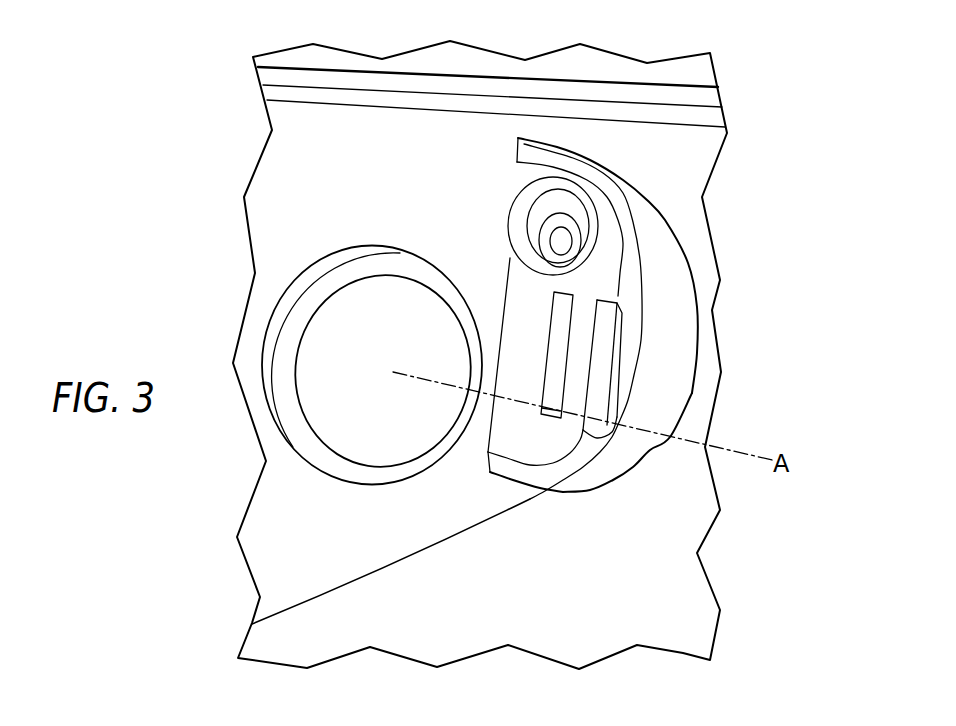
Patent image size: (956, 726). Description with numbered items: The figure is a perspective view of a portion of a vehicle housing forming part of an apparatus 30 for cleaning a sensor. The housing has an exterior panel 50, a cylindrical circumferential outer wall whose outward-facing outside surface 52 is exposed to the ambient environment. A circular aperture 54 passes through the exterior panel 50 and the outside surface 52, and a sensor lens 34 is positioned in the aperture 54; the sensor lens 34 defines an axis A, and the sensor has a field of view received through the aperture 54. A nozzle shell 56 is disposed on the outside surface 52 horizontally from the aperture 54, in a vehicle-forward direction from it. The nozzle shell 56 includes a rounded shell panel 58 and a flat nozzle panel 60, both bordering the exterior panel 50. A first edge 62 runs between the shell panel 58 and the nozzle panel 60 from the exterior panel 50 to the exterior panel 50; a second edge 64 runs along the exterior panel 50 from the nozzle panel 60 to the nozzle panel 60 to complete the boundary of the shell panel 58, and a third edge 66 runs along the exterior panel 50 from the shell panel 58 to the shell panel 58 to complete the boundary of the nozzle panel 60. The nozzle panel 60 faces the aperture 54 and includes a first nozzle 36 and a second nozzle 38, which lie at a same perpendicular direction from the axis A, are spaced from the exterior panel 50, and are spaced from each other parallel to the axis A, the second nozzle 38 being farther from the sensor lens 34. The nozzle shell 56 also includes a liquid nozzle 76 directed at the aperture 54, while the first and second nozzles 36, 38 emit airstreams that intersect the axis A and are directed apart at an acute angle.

The apparatus 30 is at (741, 183).
The sensor lens 34 is at (332, 446).
The first nozzle 36 is at (568, 294).
The second nozzle 38 is at (617, 297).
The exterior panel 50 is at (420, 557).
The outside surface 52 is at (277, 187).
The aperture 54 is at (380, 243).
The nozzle shell 56 is at (690, 265).
The shell panel 58 is at (636, 451).
The nozzle panel 60 is at (572, 441).
The first edge 62 is at (641, 333).
The second edge 64 is at (563, 150).
The third edge 66 is at (508, 278).
The liquid nozzle 76 is at (553, 230).